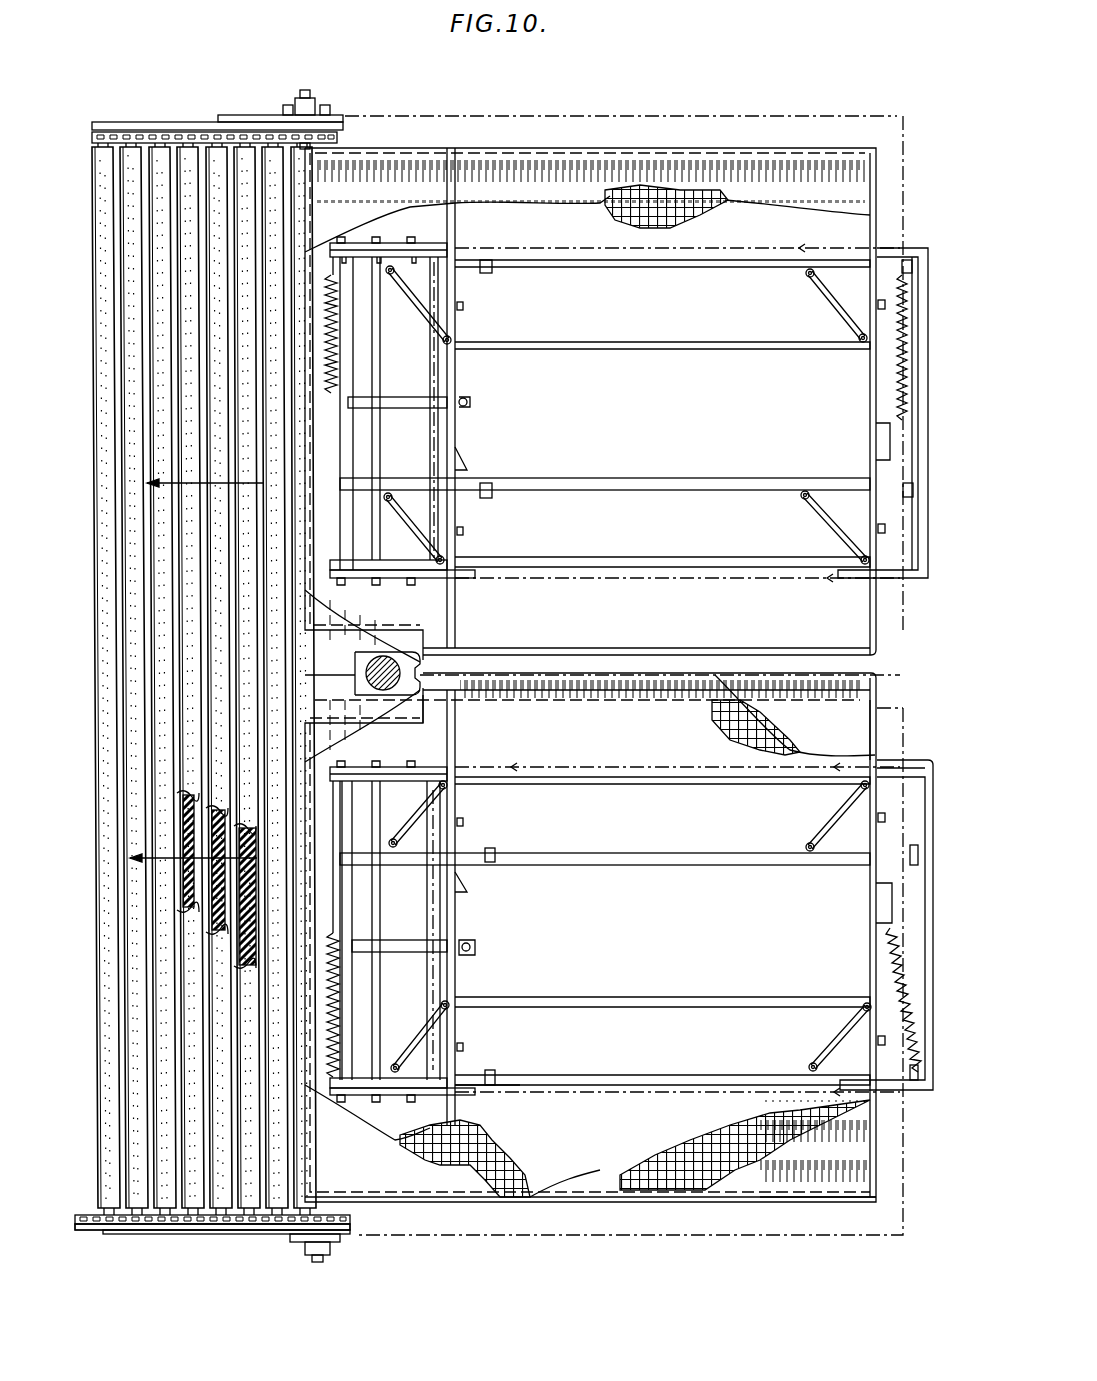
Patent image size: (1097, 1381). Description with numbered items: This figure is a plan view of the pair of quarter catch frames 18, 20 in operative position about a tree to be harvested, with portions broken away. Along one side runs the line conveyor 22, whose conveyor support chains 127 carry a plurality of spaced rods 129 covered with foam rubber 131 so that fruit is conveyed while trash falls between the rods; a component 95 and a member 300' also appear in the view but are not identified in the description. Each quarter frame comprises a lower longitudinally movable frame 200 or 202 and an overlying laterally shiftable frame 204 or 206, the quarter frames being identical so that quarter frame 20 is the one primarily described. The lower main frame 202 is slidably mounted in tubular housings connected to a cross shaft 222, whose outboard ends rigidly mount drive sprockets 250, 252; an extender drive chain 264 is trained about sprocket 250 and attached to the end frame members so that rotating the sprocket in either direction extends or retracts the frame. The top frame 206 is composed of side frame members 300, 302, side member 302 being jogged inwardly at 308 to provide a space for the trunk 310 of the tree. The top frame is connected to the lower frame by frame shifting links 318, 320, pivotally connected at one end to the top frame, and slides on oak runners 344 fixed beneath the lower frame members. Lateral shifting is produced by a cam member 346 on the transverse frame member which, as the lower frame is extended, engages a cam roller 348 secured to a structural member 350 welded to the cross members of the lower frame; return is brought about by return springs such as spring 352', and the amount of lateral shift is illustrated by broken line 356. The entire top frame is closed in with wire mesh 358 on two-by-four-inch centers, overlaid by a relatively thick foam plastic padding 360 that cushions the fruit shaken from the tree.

The quarter frame 18 is at (913, 148).
The quarter frame 20 is at (942, 775).
The line conveyor 22 is at (95, 1062).
The bolt 95 is at (305, 1250).
The conveyor support chain 127 is at (162, 130).
The spaced rod 129 is at (240, 1220).
The foam rubber covering 131 is at (132, 790).
The lower longitudinally movable frame 200 is at (913, 487).
The lower longitudinally movable main frame 202 is at (930, 838).
The laterally shiftable frame 204 is at (895, 633).
The laterally shiftable top frame 206 is at (875, 735).
The cross shaft 222 is at (380, 916).
The drive sprocket 250 is at (380, 1100).
The drive sprocket 252 is at (905, 1007).
The extender drive chain 264 is at (510, 1100).
The side frame member 300 is at (818, 1212).
The upper panel 300' is at (612, 329).
The side frame member 302 is at (572, 705).
The inward jog 308 is at (415, 705).
The tree trunk 310 is at (395, 665).
The frame shifting link 318 is at (833, 1030).
The frame shifting link 320 is at (843, 805).
The runner 344 is at (690, 866).
The cam member 346 is at (470, 885).
The cam roller 348 is at (477, 948).
The structural member 350 is at (423, 948).
The return spring 352' is at (382, 1005).
The broken line 356 is at (545, 1240).
The wire mesh 358 is at (673, 1175).
The foam plastic padding 360 is at (425, 1175).